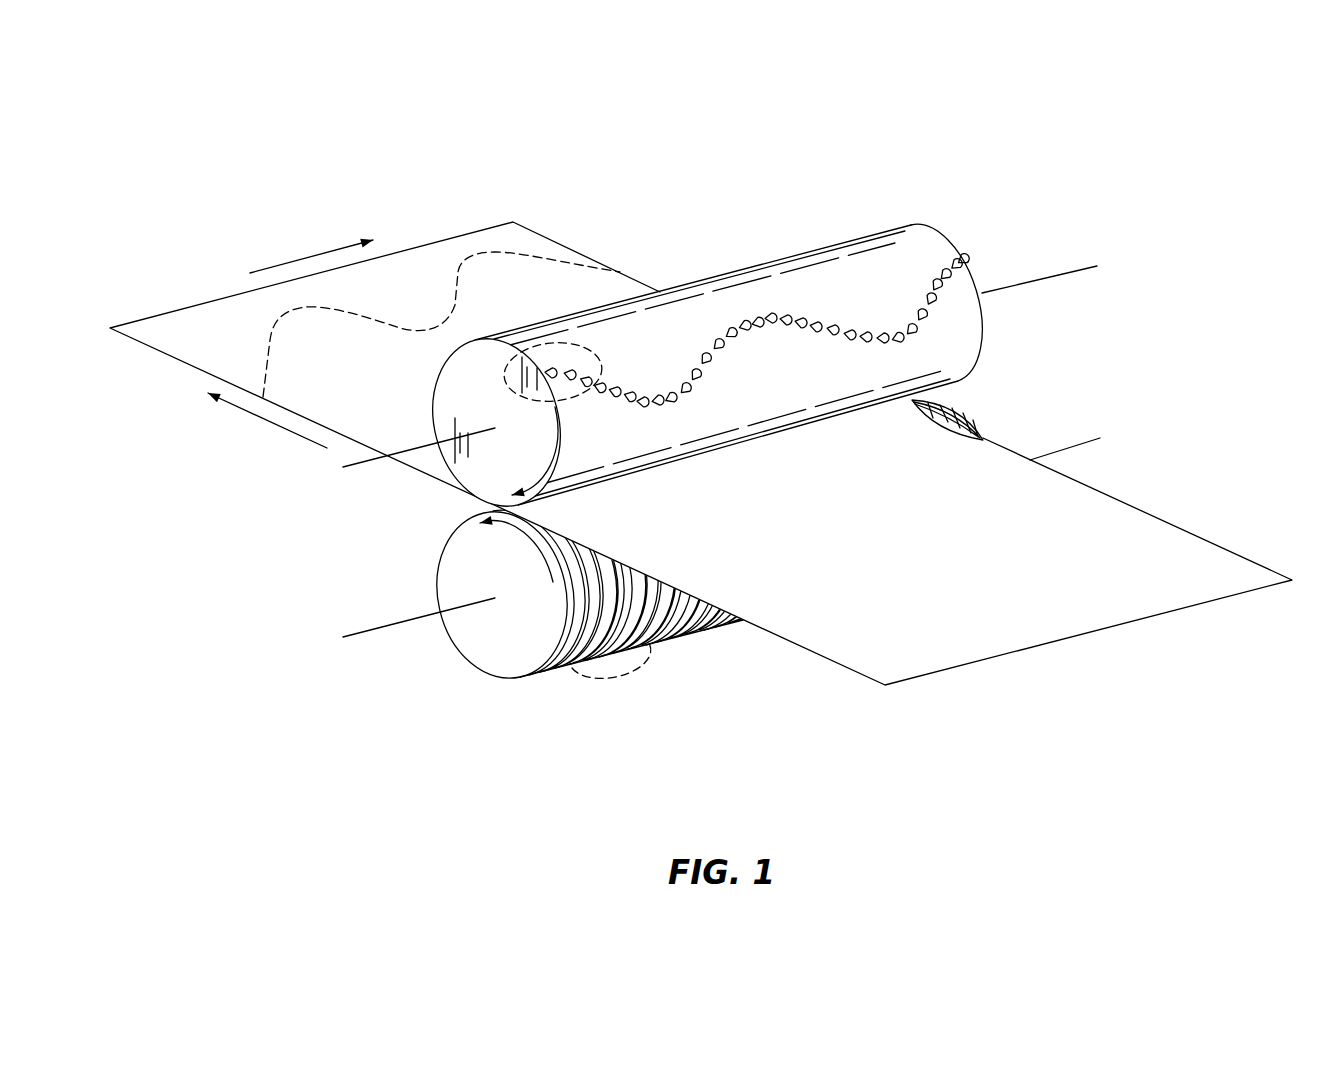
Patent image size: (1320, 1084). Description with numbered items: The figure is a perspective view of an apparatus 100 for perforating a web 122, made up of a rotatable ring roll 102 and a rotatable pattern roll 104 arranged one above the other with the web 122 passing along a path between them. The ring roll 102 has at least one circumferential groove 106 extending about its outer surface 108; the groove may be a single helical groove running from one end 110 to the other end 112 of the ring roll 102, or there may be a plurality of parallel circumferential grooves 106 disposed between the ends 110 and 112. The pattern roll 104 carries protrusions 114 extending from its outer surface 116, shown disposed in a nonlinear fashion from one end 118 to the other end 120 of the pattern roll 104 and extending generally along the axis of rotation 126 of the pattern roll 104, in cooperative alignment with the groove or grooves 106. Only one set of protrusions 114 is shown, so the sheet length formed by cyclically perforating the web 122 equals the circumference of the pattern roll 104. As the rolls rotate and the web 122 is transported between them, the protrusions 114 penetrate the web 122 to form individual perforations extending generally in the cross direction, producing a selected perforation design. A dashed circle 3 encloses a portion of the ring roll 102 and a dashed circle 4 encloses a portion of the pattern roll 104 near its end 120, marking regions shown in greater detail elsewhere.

The apparatus 100 is at (787, 240).
The ring roll 102 is at (690, 645).
The pattern roll 104 is at (937, 237).
The circumferential groove 106 is at (657, 647).
The outer surface 108 is at (622, 560).
The end 110 is at (973, 417).
The end 112 is at (467, 637).
The protrusions 114 is at (967, 260).
The outer surface 116 is at (670, 352).
The end 118 is at (985, 315).
The end 120 is at (483, 485).
The web 122 is at (1103, 515).
The axis of rotation 126 is at (1065, 268).
The detail region of FIG. 4 is at (550, 347).
The detail region of FIG. 3 is at (573, 673).